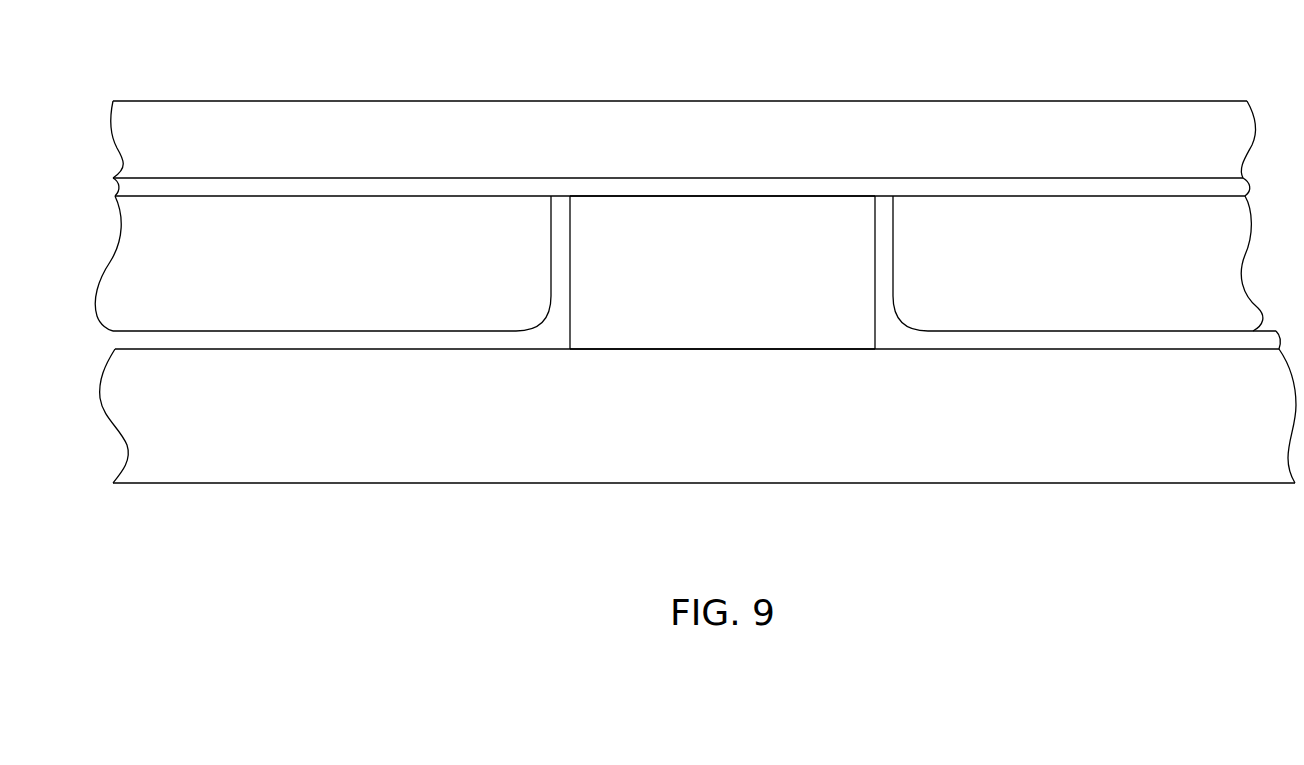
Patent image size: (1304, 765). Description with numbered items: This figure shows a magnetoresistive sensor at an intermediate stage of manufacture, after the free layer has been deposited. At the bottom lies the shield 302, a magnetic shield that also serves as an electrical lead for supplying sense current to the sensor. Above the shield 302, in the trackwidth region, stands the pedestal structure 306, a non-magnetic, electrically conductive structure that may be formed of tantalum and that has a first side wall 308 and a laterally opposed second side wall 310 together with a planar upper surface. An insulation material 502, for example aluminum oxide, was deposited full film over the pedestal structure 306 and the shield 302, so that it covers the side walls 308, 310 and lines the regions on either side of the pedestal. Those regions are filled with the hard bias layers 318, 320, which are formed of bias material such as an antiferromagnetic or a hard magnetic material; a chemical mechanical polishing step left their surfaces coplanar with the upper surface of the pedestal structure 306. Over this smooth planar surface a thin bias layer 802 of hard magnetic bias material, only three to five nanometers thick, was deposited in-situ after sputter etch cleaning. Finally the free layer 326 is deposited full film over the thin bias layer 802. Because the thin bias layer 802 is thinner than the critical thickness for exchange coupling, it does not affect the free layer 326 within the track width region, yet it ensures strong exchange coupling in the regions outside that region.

The shield 302 is at (777, 412).
The pedestal structure 306 is at (779, 255).
The first side wall 308 is at (571, 259).
The second side wall 310 is at (875, 268).
The hard bias layer 318 is at (1105, 233).
The hard bias layer 320 is at (403, 235).
The free layer 326 is at (883, 130).
The insulation material 502 is at (403, 344).
The thin bias layer 802 is at (118, 186).